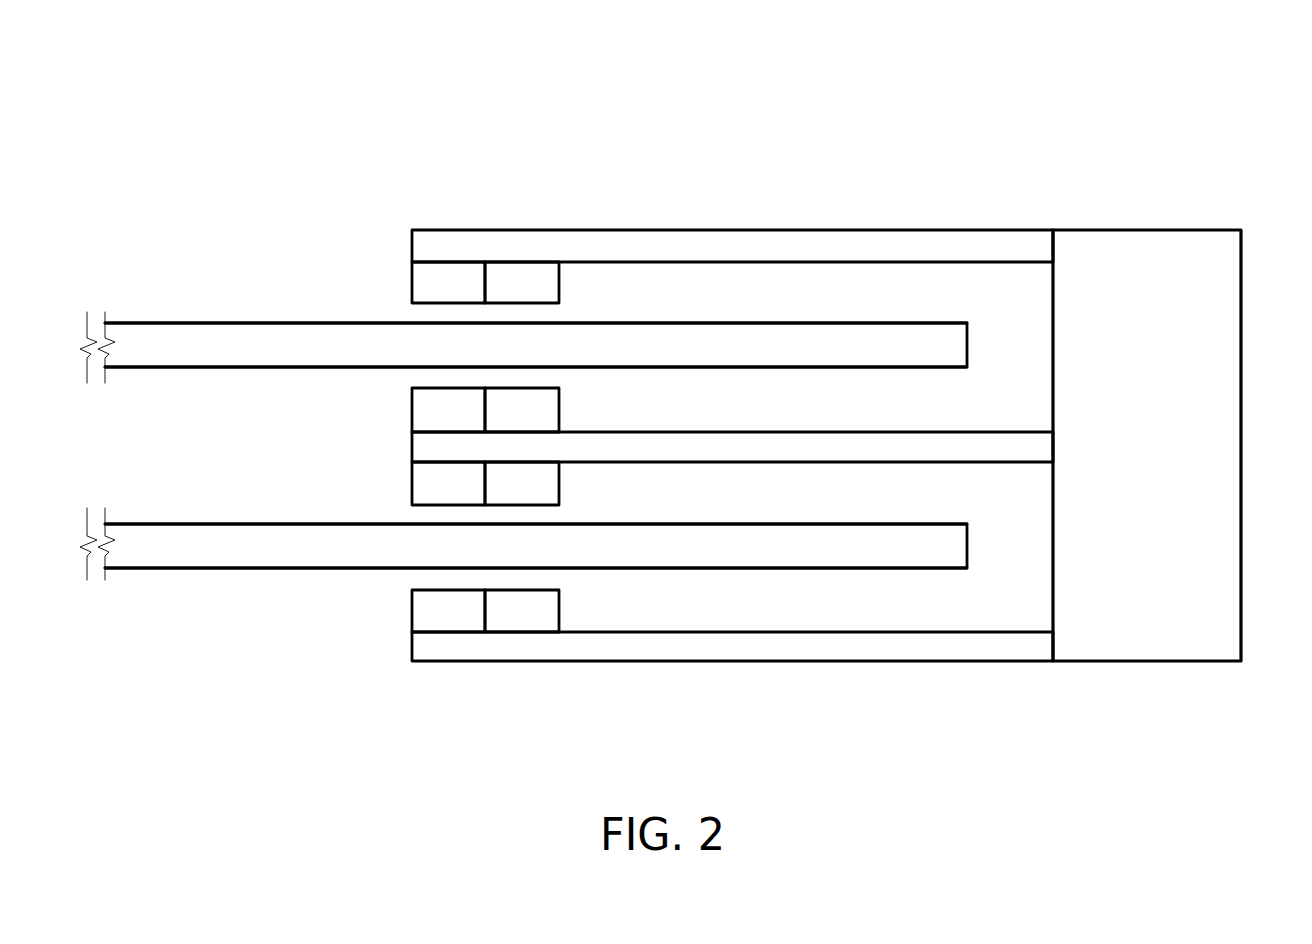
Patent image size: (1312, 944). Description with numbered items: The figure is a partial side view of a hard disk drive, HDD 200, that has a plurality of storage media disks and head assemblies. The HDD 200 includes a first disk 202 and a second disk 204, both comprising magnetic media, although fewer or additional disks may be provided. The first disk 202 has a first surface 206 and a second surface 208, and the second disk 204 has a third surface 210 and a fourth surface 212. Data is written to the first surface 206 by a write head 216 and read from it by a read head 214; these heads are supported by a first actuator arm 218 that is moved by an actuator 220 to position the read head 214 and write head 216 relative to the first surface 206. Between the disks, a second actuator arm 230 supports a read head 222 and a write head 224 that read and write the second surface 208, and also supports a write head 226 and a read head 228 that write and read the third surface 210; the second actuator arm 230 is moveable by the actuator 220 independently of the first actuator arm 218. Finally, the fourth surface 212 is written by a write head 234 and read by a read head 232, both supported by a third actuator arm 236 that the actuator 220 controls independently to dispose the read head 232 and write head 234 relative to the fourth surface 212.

The hard disk drive (HDD) 200 is at (1202, 147).
The first disk 202 is at (380, 335).
The second disk 204 is at (365, 553).
The first surface 206 is at (247, 322).
The second surface 208 is at (368, 364).
The third surface 210 is at (295, 524).
The fourth surface 212 is at (252, 569).
The read head 214 is at (455, 288).
The write head 216 is at (523, 279).
The first actuator arm 218 is at (762, 230).
The actuator 220 is at (1155, 302).
The read head 222 is at (445, 414).
The write head 224 is at (527, 418).
The write head 226 is at (445, 482).
The read head 228 is at (527, 487).
The second actuator arm 230 is at (815, 445).
The read head 232 is at (452, 605).
The write head 234 is at (534, 612).
The third actuator arm 236 is at (850, 652).